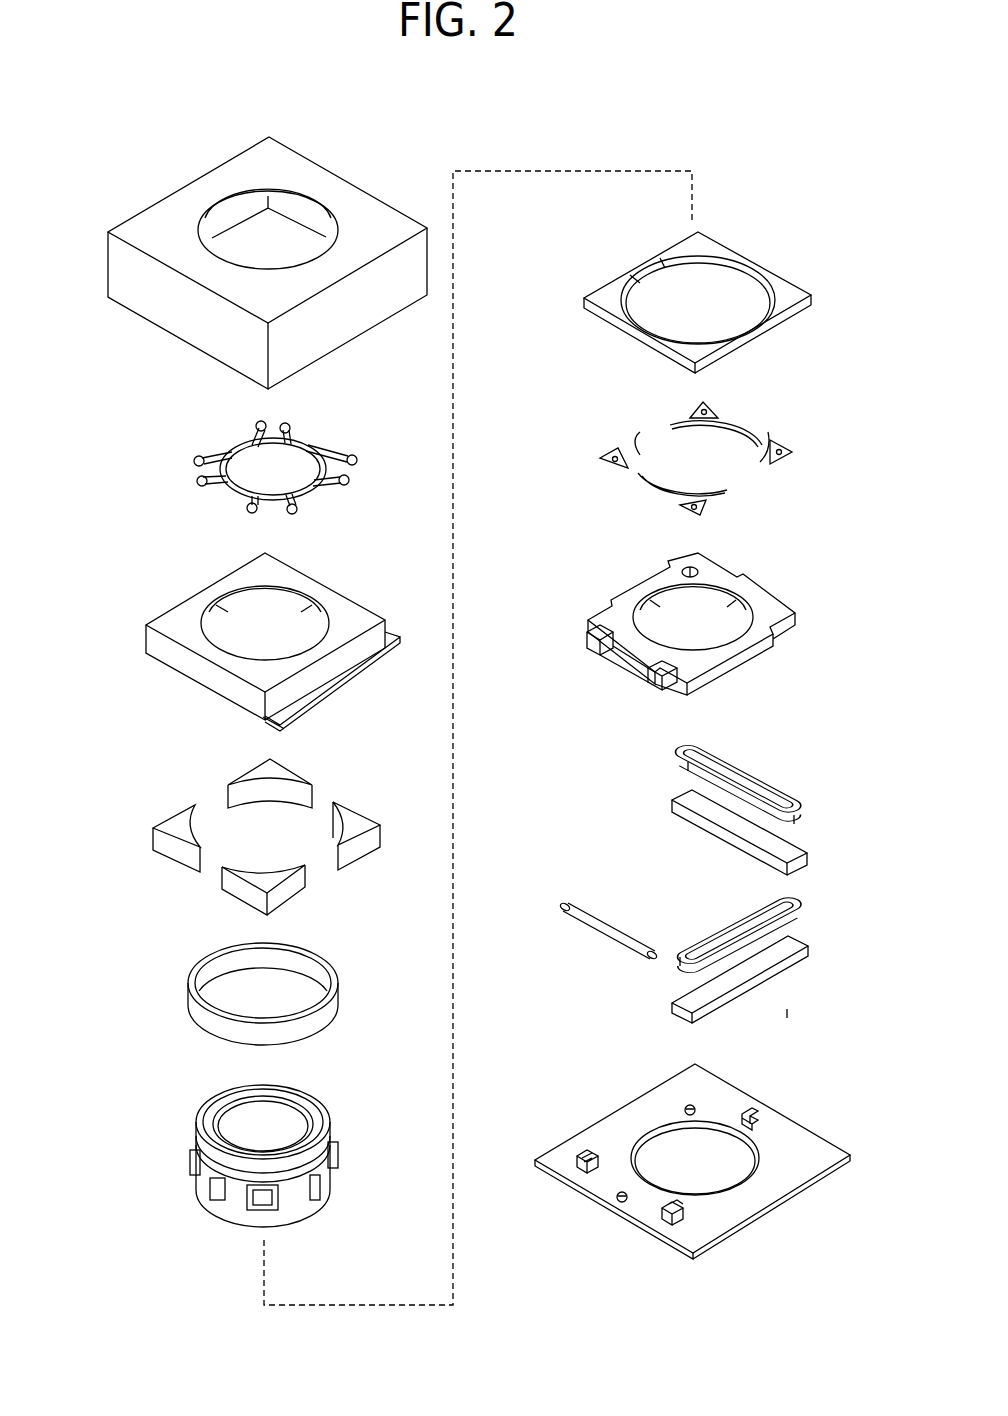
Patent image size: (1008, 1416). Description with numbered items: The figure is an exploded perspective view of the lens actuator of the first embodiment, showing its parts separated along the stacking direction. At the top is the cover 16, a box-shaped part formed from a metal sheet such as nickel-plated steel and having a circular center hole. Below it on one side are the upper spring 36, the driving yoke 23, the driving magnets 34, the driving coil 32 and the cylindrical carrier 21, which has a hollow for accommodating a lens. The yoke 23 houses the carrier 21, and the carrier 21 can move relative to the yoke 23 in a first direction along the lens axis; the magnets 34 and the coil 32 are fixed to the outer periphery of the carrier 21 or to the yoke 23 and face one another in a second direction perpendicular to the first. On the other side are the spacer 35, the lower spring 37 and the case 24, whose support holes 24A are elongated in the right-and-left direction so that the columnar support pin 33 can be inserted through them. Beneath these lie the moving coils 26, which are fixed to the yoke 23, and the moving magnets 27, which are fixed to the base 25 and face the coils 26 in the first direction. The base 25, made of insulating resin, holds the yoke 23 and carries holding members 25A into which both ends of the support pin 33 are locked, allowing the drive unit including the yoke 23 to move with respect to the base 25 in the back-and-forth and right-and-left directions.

The cover 16 is at (170, 192).
The upper spring 36 is at (208, 445).
The driving yoke 23 is at (182, 597).
The driving magnets 34 is at (177, 812).
The driving coil 32 is at (190, 970).
The cylindrical carrier 21 is at (192, 1130).
The spacer 35 is at (768, 263).
The lower spring 37 is at (767, 435).
The case 24 is at (780, 593).
The support holes 24A is at (663, 678).
The moving coils 26 is at (732, 922).
The moving magnets 27 is at (812, 940).
The support pin 33 is at (590, 912).
The base 25 is at (692, 1178).
The holding members 25A is at (665, 1213).